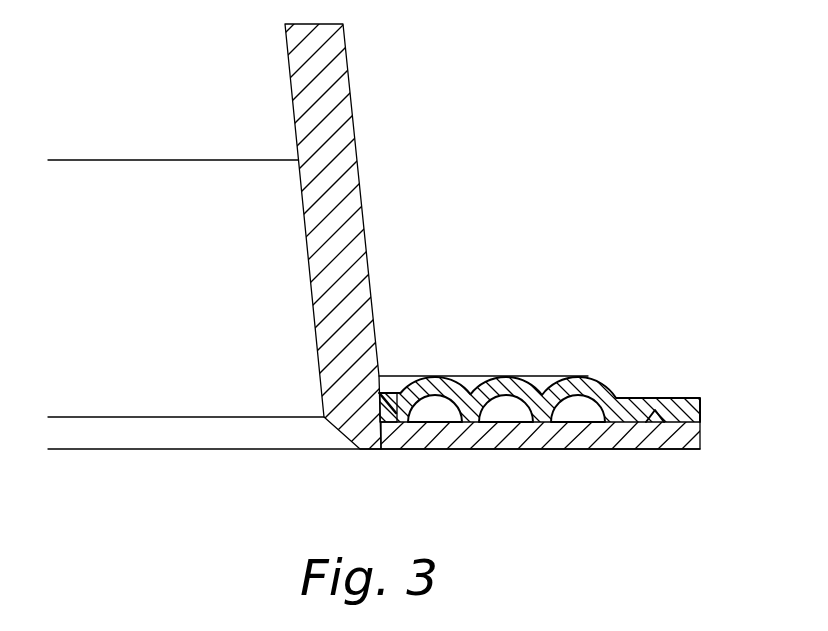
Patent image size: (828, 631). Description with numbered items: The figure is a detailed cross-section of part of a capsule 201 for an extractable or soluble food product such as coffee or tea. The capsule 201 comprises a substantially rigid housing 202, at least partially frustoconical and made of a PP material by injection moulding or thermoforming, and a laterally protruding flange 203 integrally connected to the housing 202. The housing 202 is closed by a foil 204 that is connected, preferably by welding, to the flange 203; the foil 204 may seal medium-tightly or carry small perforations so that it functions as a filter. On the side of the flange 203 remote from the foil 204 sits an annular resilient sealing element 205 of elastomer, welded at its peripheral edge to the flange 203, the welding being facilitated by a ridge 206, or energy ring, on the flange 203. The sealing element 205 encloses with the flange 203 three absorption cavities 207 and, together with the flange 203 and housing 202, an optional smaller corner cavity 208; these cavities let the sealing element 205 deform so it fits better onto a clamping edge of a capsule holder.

The capsule 201 is at (395, 41).
The housing 202 is at (340, 190).
The flange 203 is at (515, 433).
The foil 204 is at (227, 452).
The sealing element 205 is at (661, 398).
The ridge 206 is at (651, 418).
The absorption cavities 207 is at (435, 408).
The corner cavity 208 is at (386, 418).